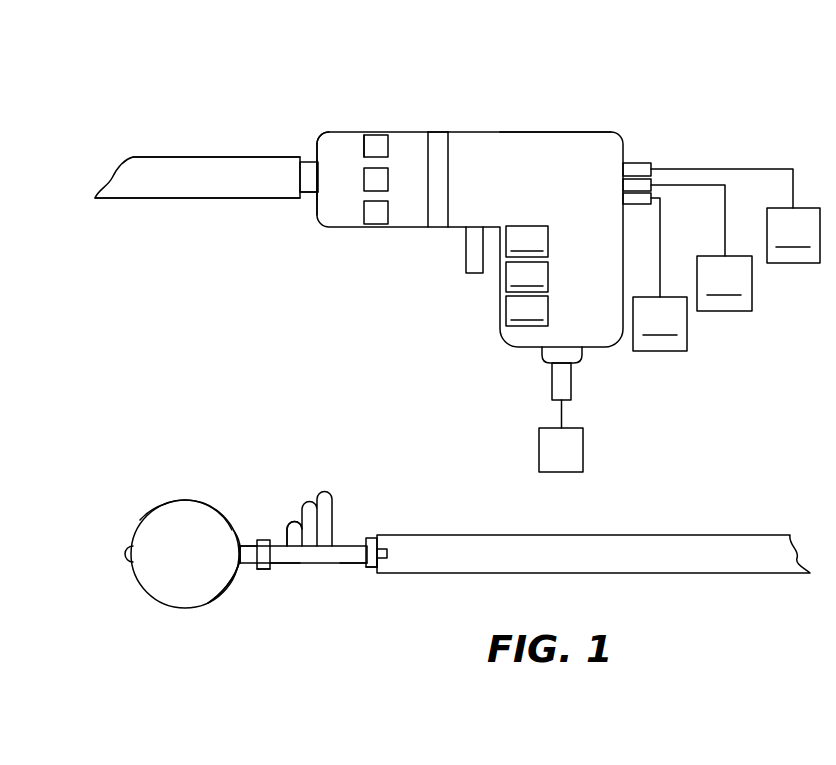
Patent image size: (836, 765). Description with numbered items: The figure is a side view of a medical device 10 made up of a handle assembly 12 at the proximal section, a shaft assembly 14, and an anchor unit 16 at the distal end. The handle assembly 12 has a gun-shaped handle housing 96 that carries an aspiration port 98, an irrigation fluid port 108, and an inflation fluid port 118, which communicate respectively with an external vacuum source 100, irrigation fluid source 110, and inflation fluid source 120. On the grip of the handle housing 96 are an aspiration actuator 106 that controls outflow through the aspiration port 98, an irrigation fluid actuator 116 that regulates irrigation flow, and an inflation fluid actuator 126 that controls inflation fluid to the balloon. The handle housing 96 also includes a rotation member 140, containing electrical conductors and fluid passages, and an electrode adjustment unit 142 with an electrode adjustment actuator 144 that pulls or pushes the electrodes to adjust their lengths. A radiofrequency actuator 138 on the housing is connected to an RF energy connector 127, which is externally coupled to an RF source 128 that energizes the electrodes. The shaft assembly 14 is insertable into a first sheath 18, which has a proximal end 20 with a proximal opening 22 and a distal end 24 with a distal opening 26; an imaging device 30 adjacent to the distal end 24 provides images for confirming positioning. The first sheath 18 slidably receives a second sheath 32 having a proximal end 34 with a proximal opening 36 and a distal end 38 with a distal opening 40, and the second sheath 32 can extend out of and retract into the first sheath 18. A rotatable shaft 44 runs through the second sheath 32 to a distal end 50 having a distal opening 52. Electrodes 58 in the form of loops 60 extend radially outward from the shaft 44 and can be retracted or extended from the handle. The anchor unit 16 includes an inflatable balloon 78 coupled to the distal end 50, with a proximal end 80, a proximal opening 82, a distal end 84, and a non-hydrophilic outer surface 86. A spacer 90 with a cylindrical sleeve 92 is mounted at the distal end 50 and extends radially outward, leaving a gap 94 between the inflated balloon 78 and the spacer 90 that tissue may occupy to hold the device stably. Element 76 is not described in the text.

The medical device 10 is at (96, 106).
The handle assembly 12 is at (588, 107).
The shaft assembly 14 is at (225, 203).
The anchor unit 16 is at (135, 604).
The first sheath 18 is at (190, 157).
The proximal end 20 is at (305, 160).
The proximal opening 22 is at (299, 193).
The distal end 24 is at (375, 568).
The distal opening 26 is at (372, 567).
The imaging device 30 is at (387, 553).
The second sheath 32 is at (316, 142).
The proximal end 34 is at (328, 140).
The proximal opening 36 is at (319, 184).
The distal end 38 is at (368, 538).
The distal opening 40 is at (363, 567).
The rotatable shaft 44 is at (322, 565).
The distal end 50 is at (250, 542).
The distal opening 52 is at (238, 565).
The electrodes 58 is at (304, 500).
The loops 60 is at (293, 525).
The shaft underside 76 is at (298, 565).
The inflatable balloon 78 is at (180, 505).
The proximal end 80 is at (241, 572).
The proximal opening 82 is at (221, 520).
The distal end 84 is at (132, 550).
The outer surface 86 is at (153, 510).
The spacer 90 is at (265, 540).
The cylindrical sleeve 92 is at (263, 570).
The gap 94 is at (252, 540).
The handle housing 96 is at (555, 132).
The aspiration port 98 is at (631, 162).
The vacuum source 100 is at (735, 216).
The aspiration actuator 106 is at (527, 311).
The irrigation fluid port 108 is at (638, 168).
The irrigation fluid source 110 is at (701, 248).
The irrigation fluid actuator 116 is at (527, 277).
The inflation fluid port 118 is at (651, 190).
The inflation fluid source 120 is at (660, 274).
The inflation fluid actuator 126 is at (527, 241).
The RF energy connector 127 is at (570, 380).
The RF source 128 is at (582, 442).
The radiofrequency actuator 138 is at (466, 260).
The rotation member 140 is at (436, 131).
The electrode adjustment unit 142 is at (393, 158).
The electrode adjustment actuator 144 is at (386, 134).